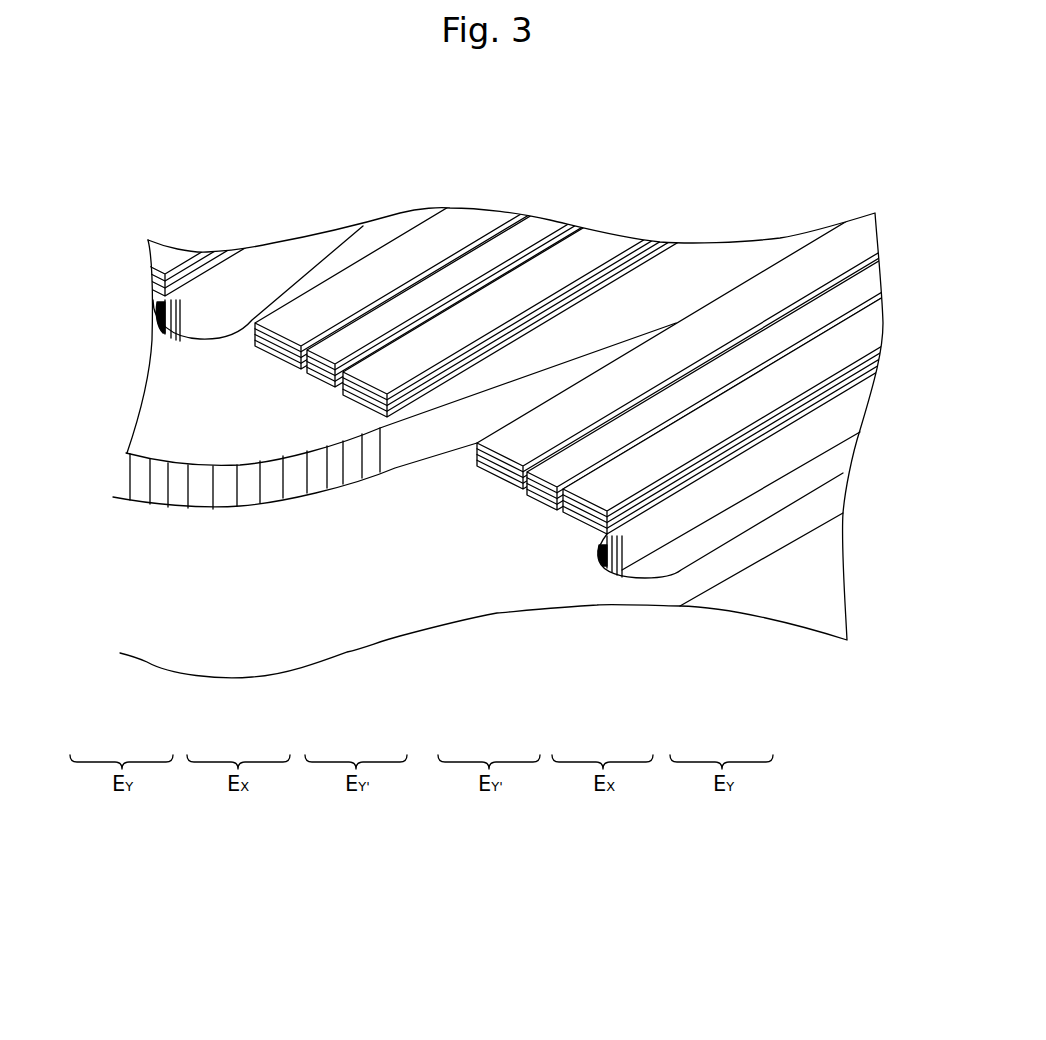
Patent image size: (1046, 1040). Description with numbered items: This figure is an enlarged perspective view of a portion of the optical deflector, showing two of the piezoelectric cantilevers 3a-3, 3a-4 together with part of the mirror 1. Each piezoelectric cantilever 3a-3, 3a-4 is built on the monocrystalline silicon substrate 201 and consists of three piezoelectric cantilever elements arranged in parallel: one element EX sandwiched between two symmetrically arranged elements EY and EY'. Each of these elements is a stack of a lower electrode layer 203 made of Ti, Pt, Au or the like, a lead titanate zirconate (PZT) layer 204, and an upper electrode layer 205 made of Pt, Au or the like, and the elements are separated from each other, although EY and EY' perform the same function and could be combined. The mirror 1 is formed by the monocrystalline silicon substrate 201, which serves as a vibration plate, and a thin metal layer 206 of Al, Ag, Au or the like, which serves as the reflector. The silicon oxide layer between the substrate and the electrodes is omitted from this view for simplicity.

The mirror 1 is at (558, 431).
The monocrystalline silicon substrate 201 is at (558, 431).
The lower electrode layer 203 is at (577, 431).
The PZT layer 204 is at (576, 431).
The upper electrode layer 205 is at (558, 431).
The metal layer 206 is at (830, 562).
The piezoelectric cantilever 3a-3 is at (108, 808).
The piezoelectric cantilever 3a-4 is at (761, 443).